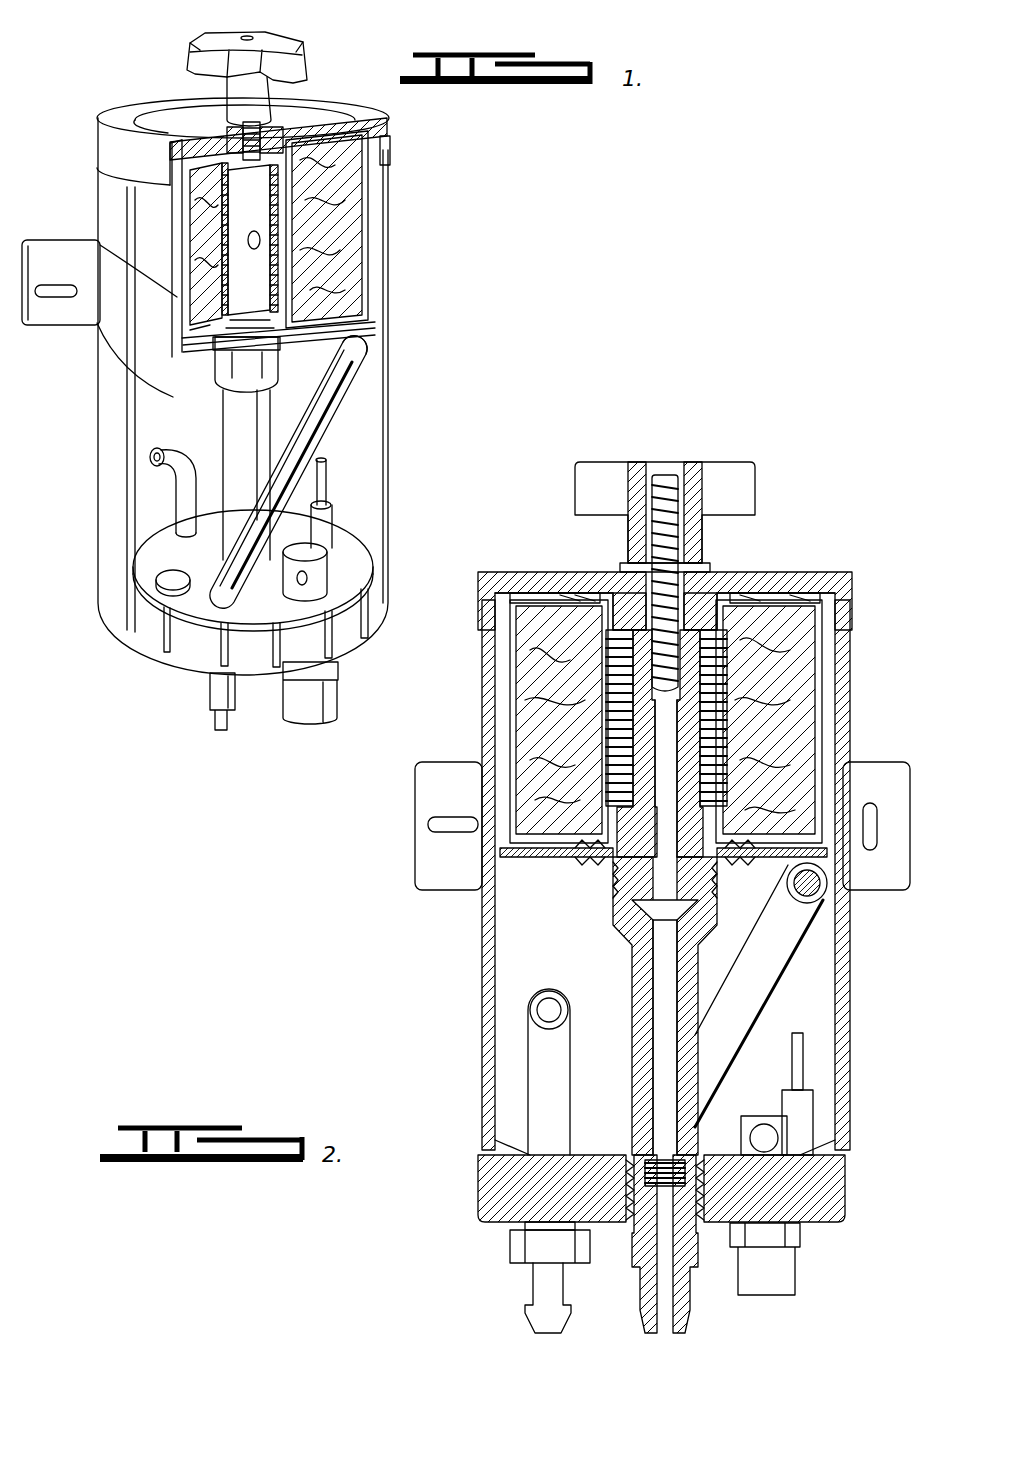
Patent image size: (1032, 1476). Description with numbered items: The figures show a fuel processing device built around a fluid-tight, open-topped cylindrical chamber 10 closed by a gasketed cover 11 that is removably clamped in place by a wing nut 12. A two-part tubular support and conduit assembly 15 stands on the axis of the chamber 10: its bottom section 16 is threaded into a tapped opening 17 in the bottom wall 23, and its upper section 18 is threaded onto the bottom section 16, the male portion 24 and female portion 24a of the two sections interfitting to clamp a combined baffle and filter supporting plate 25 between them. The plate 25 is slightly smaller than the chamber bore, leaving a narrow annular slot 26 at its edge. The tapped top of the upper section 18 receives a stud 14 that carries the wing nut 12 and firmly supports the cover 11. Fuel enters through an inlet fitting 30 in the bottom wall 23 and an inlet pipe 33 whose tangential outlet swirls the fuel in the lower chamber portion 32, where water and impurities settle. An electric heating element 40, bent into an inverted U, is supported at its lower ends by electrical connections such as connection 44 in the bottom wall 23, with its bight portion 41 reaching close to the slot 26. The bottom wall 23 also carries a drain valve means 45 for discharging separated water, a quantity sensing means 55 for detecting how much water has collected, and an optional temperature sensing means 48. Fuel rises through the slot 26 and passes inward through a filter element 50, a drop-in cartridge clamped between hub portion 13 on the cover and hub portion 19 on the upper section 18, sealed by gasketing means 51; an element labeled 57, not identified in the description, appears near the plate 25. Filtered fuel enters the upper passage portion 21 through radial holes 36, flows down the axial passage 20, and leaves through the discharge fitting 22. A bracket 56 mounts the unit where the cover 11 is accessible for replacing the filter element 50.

In FIG. 1, the cylindrical enclosure or chamber 10 is at (396, 371).
In FIG. 1, the cover 11 is at (118, 110).
In FIG. 2, the cover 11 is at (538, 572).
In FIG. 1, the wing nut 12 is at (190, 48).
In FIG. 2, the wing nut 12 is at (595, 468).
In FIG. 2, the hub portion 13 is at (722, 582).
In FIG. 2, the stud 14 is at (665, 478).
In FIG. 2, the tubular support and conduit assembly 15 is at (598, 904).
In FIG. 1, the bottom section 16 is at (232, 415).
In FIG. 2, the bottom section 16 is at (638, 972).
In FIG. 2, the tapped opening 17 is at (618, 1155).
In FIG. 1, the upper section 18 is at (250, 240).
In FIG. 2, the upper section 18 is at (712, 665).
In FIG. 2, the hub portion 19 is at (612, 825).
In FIG. 2, the axial passage 20 is at (665, 947).
In FIG. 2, the upper passage portion 21 is at (678, 772).
In FIG. 2, the fuel discharge fitting 22 is at (635, 1258).
In FIG. 2, the bottom wall 23 is at (500, 1180).
In FIG. 2, the male portion 24 is at (630, 880).
In FIG. 2, the female portion 24a is at (700, 870).
In FIG. 1, the combined baffle and filter supporting plate 25 is at (330, 320).
In FIG. 2, the combined baffle and filter supporting plate 25 is at (503, 862).
In FIG. 1, the annular slot 26 is at (385, 335).
In FIG. 2, the annular slot 26 is at (830, 850).
In FIG. 2, the fuel inlet fitting 30 is at (510, 1246).
In FIG. 1, the lower chamber portion 32 is at (355, 450).
In FIG. 2, the lower chamber portion 32 is at (505, 1027).
In FIG. 1, the inlet pipe 33 is at (157, 470).
In FIG. 2, the inlet pipe 33 is at (540, 1070).
In FIG. 1, the radially-extending holes 36 is at (250, 245).
In FIG. 2, the radially-extending holes 36 is at (705, 720).
In FIG. 1, the electric heating element 40 is at (353, 414).
In FIG. 2, the electric heating element 40 is at (803, 963).
In FIG. 1, the bight portion 41 is at (345, 350).
In FIG. 2, the bight portion 41 is at (822, 897).
In FIG. 1, the electrical connection 44 is at (210, 693).
In FIG. 1, the drain valve means 45 is at (342, 566).
In FIG. 2, the drain valve means 45 is at (757, 1107).
In FIG. 1, the temperature sensing means 48 is at (186, 574).
In FIG. 1, the filter element 50 is at (362, 210).
In FIG. 2, the filter element 50 is at (818, 690).
In FIG. 2, the gasketing means 51 is at (592, 592).
In FIG. 1, the quantity sensing means 55 is at (350, 519).
In FIG. 2, the quantity sensing means 55 is at (818, 1108).
In FIG. 1, the bracket 56 is at (45, 242).
In FIG. 2, the seal 57 is at (578, 858).